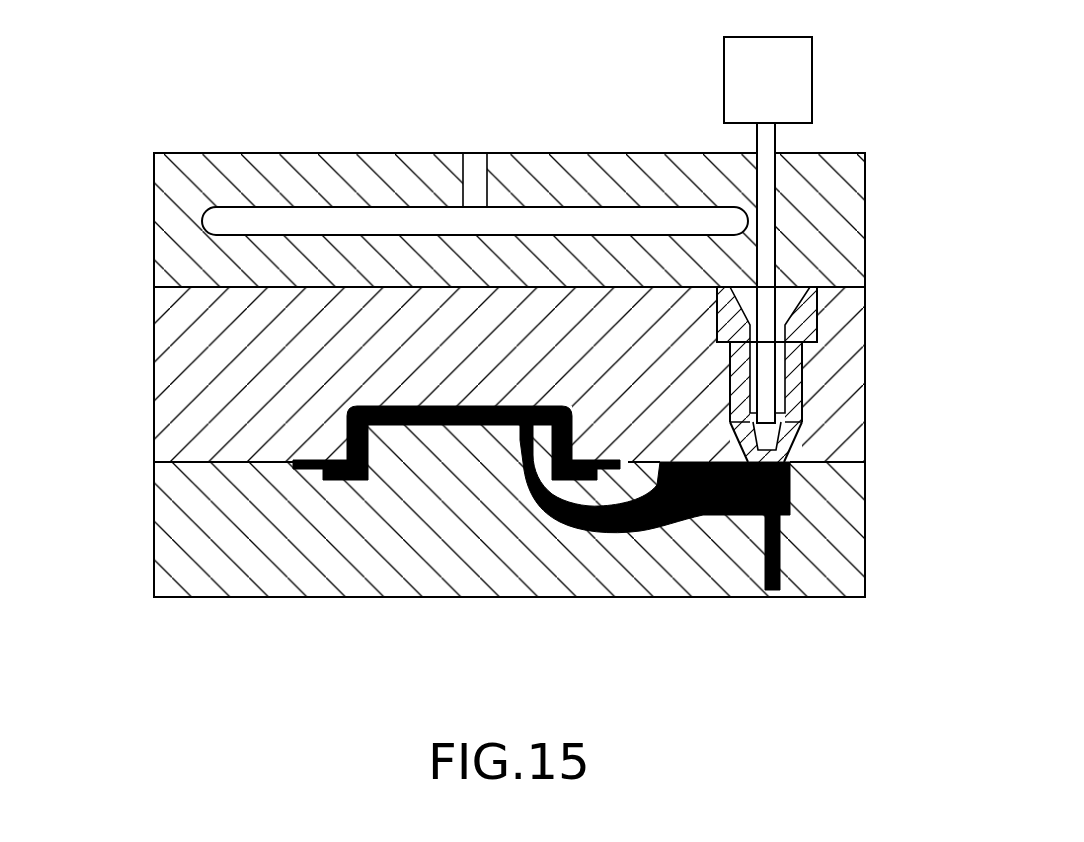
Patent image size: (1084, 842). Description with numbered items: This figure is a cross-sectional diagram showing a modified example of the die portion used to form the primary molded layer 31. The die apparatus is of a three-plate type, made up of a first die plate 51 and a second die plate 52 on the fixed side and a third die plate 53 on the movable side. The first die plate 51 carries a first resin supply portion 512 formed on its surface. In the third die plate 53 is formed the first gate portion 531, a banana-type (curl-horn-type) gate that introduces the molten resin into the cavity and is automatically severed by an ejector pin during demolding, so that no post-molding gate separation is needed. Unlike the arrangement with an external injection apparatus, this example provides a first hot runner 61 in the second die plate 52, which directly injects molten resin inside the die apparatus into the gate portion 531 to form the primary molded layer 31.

The first die plate 51 is at (187, 260).
The first resin supply portion 512 is at (471, 195).
The second die plate 52 is at (187, 402).
The third die plate 53 is at (187, 538).
The primary molded layer 31 is at (453, 427).
The first gate portion 531 is at (550, 513).
The first hot runner 61 is at (818, 380).